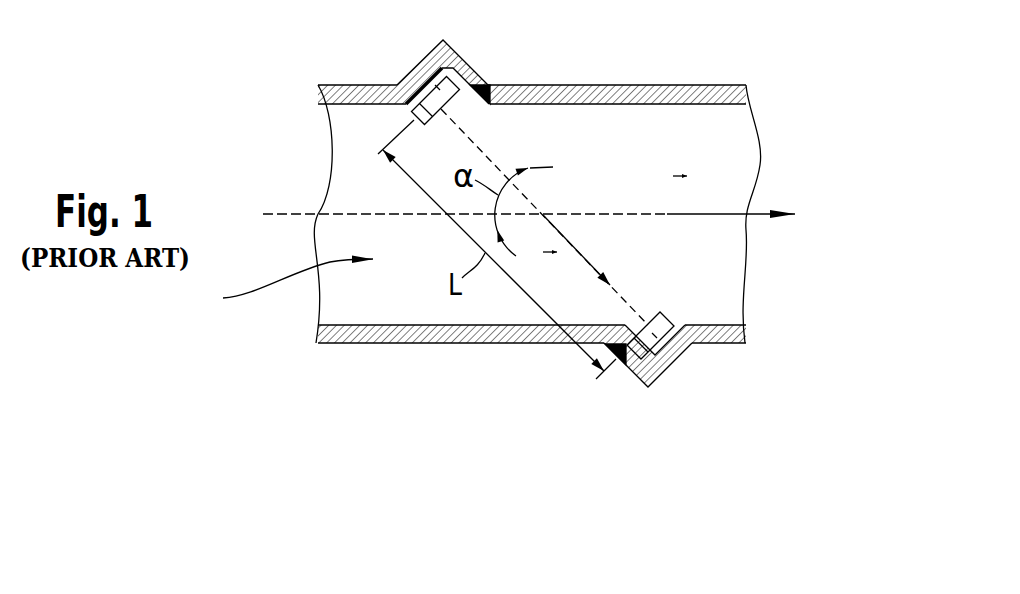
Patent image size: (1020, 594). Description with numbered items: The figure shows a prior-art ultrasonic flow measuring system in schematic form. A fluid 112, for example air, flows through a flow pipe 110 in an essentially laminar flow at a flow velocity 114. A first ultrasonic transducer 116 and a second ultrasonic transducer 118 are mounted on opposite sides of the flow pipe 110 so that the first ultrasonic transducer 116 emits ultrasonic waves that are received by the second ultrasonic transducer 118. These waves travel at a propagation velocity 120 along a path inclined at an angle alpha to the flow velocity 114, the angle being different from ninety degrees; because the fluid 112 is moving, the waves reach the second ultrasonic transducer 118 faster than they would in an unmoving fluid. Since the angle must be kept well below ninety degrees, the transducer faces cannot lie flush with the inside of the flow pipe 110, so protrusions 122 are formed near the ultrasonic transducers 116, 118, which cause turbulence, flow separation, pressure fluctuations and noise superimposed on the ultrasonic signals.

The flow pipe 110 is at (656, 85).
The fluid 112 is at (275, 287).
The flow velocity 114 is at (757, 214).
The first ultrasonic transducer 116 is at (465, 66).
The second ultrasonic transducer 118 is at (668, 311).
The propagation velocity 120 is at (558, 229).
The protrusions 122 is at (481, 90).